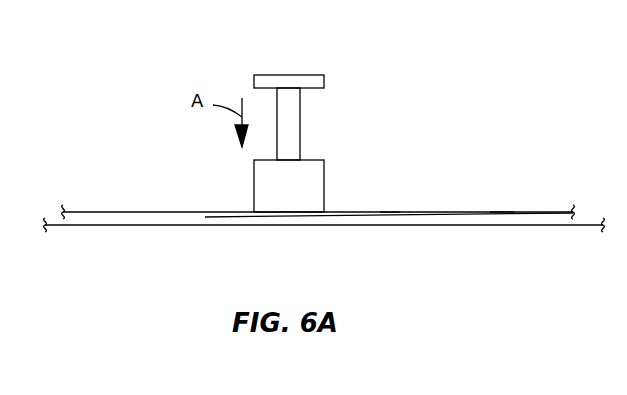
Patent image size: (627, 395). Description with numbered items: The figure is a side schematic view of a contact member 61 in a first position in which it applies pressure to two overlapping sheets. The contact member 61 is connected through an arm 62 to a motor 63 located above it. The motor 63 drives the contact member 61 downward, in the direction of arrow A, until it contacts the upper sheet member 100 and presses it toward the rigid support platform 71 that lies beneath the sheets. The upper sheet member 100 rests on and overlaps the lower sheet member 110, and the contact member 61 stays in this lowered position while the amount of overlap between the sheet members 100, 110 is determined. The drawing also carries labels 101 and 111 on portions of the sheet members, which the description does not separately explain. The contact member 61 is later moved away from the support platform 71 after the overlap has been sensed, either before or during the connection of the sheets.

The contact member 61 is at (313, 168).
The arm 62 is at (292, 112).
The motor 63 is at (312, 82).
The support platform 71 is at (130, 227).
The sheet member 100 is at (158, 211).
The upper surface of layer 100 101 is at (380, 212).
The sheet member 110 is at (502, 212).
The intermediate layer 111 is at (205, 217).